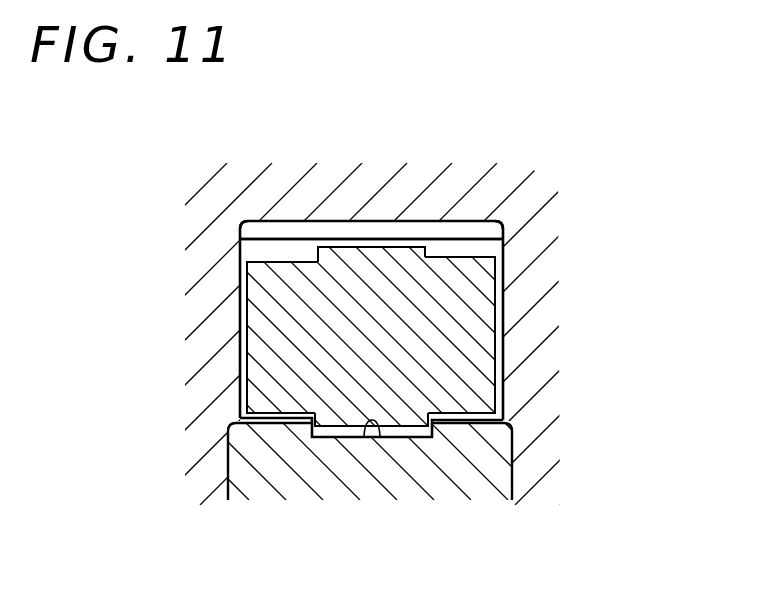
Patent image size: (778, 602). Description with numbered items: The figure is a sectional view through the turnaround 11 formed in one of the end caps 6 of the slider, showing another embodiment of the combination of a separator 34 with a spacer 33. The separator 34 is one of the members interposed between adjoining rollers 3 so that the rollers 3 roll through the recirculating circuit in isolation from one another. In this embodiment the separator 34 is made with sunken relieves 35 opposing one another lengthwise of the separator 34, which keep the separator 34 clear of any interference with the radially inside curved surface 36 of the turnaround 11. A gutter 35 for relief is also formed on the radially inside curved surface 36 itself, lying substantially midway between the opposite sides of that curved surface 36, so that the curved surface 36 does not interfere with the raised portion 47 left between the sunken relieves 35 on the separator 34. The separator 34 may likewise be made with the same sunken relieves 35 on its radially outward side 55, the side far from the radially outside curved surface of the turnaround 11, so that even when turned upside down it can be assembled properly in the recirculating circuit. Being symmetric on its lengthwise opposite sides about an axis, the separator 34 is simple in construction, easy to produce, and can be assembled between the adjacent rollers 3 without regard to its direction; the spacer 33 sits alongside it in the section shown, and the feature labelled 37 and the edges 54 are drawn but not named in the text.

The rollers 3 is at (240, 222).
The end caps 6 is at (548, 331).
The turnaround 11 is at (290, 228).
The spacer 33 is at (478, 465).
The separator 34 is at (445, 318).
The sunken relieves / gutter for relief 35 is at (310, 222).
The radially inside curved surface 36 is at (292, 416).
The recess 37 is at (383, 433).
The raised portion 47 is at (366, 247).
The edge portion 54 is at (302, 418).
The radially outward side 55 is at (411, 245).